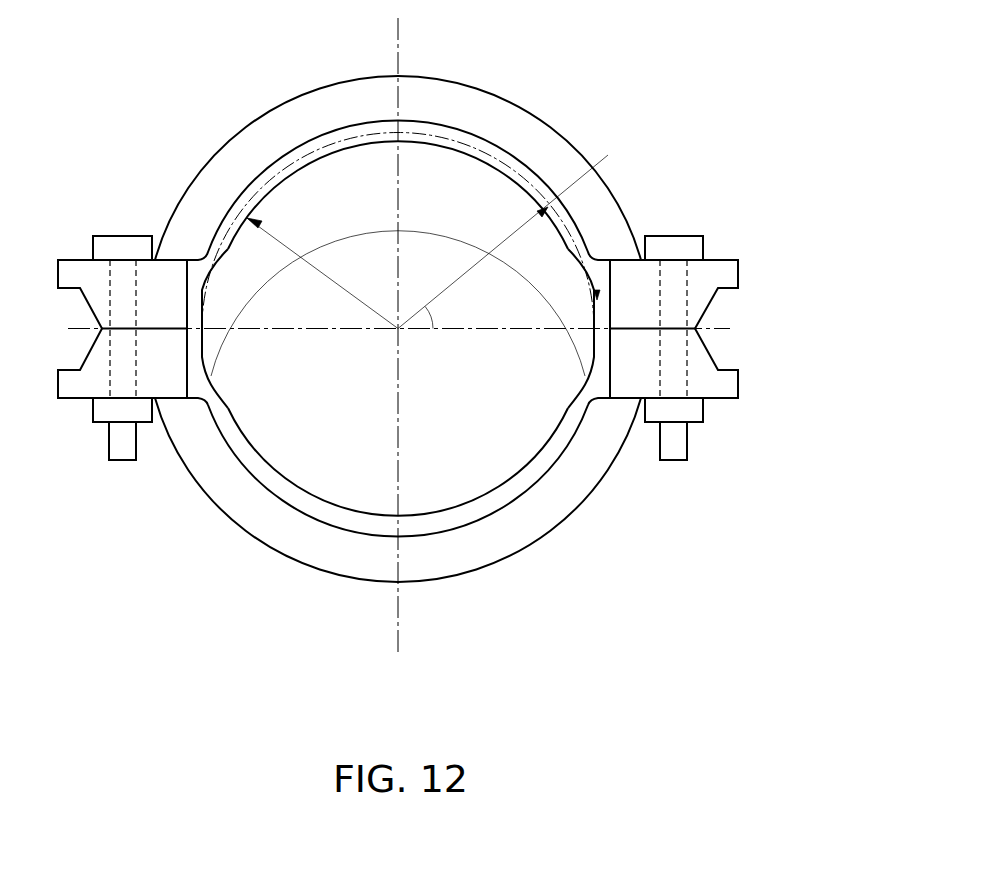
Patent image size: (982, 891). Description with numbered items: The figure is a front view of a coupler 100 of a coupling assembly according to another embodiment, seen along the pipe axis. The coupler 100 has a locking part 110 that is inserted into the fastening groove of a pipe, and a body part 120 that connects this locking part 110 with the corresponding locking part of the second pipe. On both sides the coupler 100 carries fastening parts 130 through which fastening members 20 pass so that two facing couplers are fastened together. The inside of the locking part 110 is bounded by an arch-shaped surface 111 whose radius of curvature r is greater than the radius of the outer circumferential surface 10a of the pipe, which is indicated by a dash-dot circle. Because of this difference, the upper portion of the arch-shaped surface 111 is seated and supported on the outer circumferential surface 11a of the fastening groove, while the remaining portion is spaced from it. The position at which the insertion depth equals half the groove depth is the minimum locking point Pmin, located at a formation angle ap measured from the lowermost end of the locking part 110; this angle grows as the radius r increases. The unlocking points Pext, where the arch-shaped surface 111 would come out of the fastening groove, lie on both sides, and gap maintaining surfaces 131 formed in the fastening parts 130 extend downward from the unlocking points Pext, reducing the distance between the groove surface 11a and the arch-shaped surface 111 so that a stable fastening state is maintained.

The coupler 100 is at (524, 699).
The locking part 110 is at (398, 344).
The arch-shaped surface 111 is at (575, 408).
The body part 120 is at (556, 140).
The fastening part 130 is at (695, 365).
The gap maintaining surface 131 is at (590, 303).
The fastening member 20 is at (118, 238).
The outer circumferential surface 10a is at (505, 168).
The outer circumferential surface of the fastening groove 11a is at (563, 242).
The minimum locking point Pmin is at (550, 206).
The unlocking point Pext is at (597, 298).
The radius of curvature r is at (322, 273).
The formation angle ap is at (446, 315).